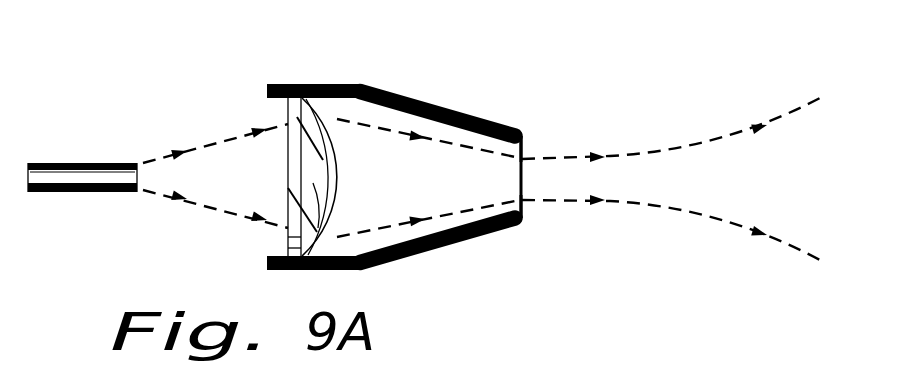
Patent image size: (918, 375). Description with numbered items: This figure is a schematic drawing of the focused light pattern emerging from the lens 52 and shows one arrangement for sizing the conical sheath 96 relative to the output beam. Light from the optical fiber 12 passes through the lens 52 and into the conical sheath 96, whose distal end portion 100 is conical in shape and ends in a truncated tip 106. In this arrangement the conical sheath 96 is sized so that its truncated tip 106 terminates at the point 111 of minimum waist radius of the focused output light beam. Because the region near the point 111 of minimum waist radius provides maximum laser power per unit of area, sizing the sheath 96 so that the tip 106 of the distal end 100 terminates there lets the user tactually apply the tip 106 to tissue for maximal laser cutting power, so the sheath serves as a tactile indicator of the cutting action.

The optical fiber 12 is at (53, 163).
The conical sheath 96 is at (422, 90).
The distal end portion 100 is at (460, 112).
The lens 52 is at (330, 183).
The truncated tip 106 is at (523, 141).
The point of minimum waist radius 111 is at (523, 199).